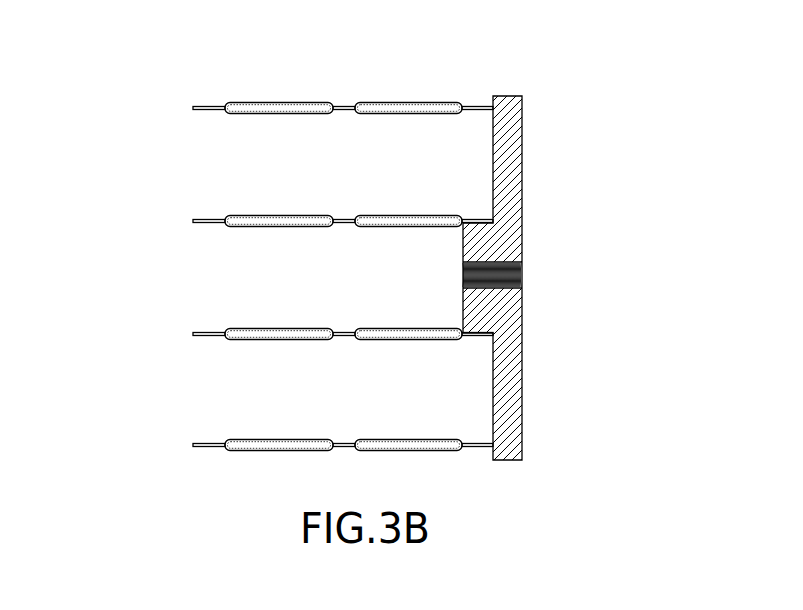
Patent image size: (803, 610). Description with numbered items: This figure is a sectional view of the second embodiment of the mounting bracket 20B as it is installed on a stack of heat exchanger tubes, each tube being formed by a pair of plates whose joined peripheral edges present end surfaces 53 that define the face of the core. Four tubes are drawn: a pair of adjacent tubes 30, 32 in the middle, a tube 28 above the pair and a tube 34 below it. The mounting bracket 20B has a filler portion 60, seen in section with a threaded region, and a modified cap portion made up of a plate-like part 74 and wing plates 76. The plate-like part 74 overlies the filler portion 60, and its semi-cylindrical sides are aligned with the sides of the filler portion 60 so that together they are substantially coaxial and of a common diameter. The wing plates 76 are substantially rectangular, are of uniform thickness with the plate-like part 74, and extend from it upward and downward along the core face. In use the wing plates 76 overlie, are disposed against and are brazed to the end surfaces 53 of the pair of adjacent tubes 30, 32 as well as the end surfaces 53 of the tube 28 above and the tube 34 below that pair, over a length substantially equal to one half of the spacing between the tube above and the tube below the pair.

The mounting bracket 20B is at (502, 244).
The tube 28 is at (301, 78).
The tube 30 is at (301, 191).
The tube 32 is at (301, 305).
The tube 34 is at (301, 415).
The end surfaces 53 is at (512, 105).
The filler portion 60 is at (477, 312).
The plate-like part 74 is at (505, 307).
The wing plates 76 is at (505, 157).